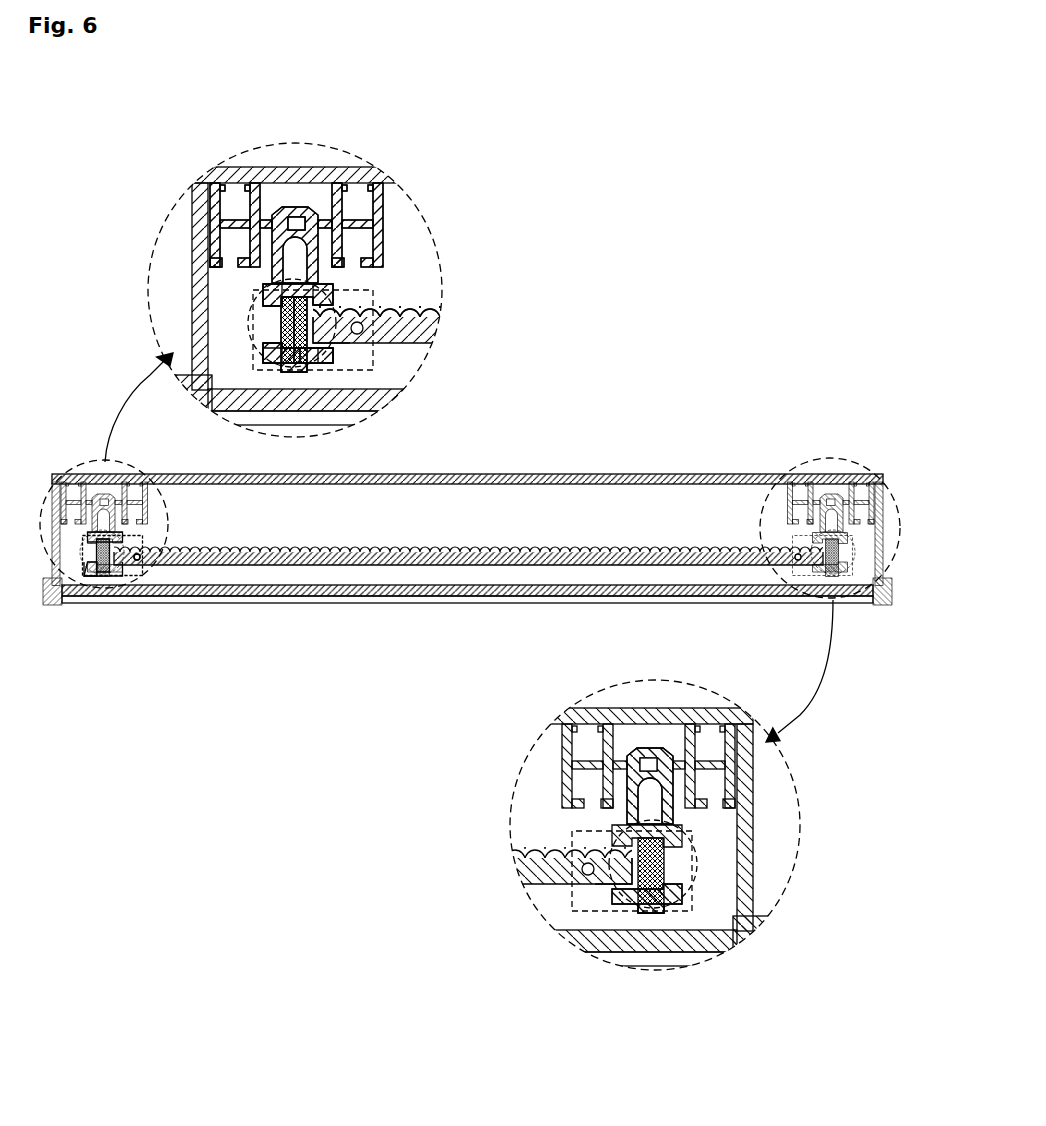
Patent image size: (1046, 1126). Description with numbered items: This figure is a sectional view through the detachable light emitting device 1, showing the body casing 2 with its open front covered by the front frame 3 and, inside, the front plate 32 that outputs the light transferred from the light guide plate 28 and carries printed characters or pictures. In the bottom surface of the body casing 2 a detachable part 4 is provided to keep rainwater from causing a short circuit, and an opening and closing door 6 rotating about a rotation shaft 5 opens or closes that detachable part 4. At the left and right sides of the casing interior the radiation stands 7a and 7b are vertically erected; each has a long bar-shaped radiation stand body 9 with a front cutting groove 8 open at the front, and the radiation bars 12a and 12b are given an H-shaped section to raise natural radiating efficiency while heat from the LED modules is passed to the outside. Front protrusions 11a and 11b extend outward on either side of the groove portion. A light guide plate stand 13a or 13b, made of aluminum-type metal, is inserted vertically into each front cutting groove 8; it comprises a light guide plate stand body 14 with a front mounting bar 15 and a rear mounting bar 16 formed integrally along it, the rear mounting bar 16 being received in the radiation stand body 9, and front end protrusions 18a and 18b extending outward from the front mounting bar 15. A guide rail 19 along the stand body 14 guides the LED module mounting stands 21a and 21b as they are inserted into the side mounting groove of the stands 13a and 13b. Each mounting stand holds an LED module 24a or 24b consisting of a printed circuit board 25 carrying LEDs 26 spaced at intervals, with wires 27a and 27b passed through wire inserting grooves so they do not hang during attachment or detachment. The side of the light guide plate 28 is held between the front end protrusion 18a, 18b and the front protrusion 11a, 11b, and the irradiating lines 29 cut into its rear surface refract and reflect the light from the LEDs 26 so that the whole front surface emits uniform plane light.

The detachable light emitting device 1 is at (652, 448).
The body casing 2 is at (535, 474).
The front frame 3 is at (478, 604).
The detachable part 4 is at (100, 570).
The rotation shaft 5 is at (140, 560).
The opening and closing door 6 is at (146, 540).
The radiation stand 7a is at (284, 196).
The radiation stand 7b is at (633, 728).
The front cutting groove 8 is at (287, 266).
The radiation stand body 9 is at (303, 206).
The front protrusion 11a is at (252, 332).
The front protrusion 11b is at (334, 306).
The radiation bar 12a is at (211, 210).
The radiation bar 12b is at (384, 200).
The light guide plate stand 13a is at (263, 355).
The light guide plate stand 13b is at (600, 893).
The light guide plate stand body 14 is at (252, 350).
The front mounting bar 15 is at (305, 372).
The rear mounting bar 16 is at (264, 296).
The front end protrusion 18a is at (265, 365).
The front end protrusion 18b is at (343, 345).
The guide rail 19 is at (92, 562).
The LED module mounting stand 21a is at (290, 372).
The LED module mounting stand 21b is at (670, 896).
The LED module 24a is at (330, 333).
The LED module 24b is at (620, 855).
The printed circuit board 25 is at (97, 578).
The LED 26 is at (102, 572).
The wire 27a is at (335, 362).
The wire 27b is at (336, 292).
The light guide plate 28 is at (428, 345).
The irradiating line 29 is at (411, 309).
The front plate 32 is at (460, 592).